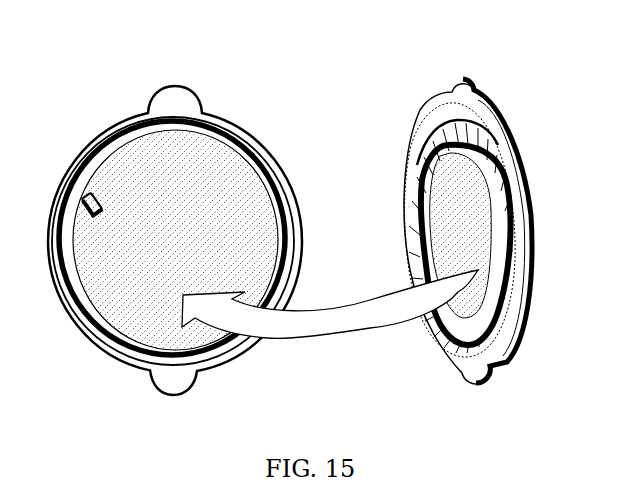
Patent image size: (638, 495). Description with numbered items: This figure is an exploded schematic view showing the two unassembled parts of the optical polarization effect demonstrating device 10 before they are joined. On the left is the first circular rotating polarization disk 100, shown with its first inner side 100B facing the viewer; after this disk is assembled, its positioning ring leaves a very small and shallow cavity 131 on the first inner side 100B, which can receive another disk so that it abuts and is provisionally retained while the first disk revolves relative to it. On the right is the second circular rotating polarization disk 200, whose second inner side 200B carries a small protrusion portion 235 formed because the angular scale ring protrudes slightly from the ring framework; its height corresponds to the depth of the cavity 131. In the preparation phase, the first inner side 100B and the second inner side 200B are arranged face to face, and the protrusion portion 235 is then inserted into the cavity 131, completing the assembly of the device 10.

The optical polarization effect demonstrating device 10 is at (328, 82).
The first circular rotating polarization disk 100 is at (162, 252).
The first inner side 100B is at (175, 240).
The cavity 131 is at (151, 205).
The second circular rotating polarization disk 200 is at (499, 210).
The second inner side 200B is at (466, 245).
The protrusion portion 235 is at (452, 120).